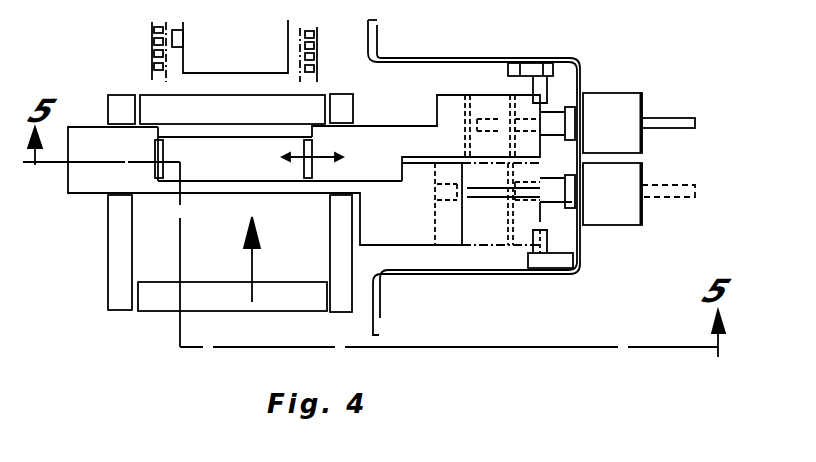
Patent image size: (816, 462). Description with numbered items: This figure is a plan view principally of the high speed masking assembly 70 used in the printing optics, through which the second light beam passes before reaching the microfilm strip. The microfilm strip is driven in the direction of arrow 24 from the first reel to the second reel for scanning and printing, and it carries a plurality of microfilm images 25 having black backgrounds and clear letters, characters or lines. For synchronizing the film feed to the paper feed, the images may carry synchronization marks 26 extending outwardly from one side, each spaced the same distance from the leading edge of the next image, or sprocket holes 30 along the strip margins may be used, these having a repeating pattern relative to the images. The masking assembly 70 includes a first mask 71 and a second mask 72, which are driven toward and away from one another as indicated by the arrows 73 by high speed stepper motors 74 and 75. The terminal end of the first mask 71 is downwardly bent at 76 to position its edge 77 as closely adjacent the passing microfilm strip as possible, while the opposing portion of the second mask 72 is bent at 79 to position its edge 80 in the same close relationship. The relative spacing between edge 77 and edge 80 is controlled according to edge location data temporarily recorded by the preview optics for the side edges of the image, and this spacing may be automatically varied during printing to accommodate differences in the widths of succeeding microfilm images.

The arrow 24 is at (253, 263).
The microfilm image 25 is at (280, 35).
The synchronization mark 26 is at (173, 33).
The sprocket holes 30 is at (313, 58).
The masking assembly 70 is at (425, 72).
The first mask 71 is at (407, 135).
The second mask 72 is at (225, 188).
The arrows 73 is at (303, 150).
The high speed stepper motor 74 is at (612, 100).
The high speed stepper motor 75 is at (623, 218).
The downward bend of first mask 76 is at (315, 168).
The edge of first mask 77 is at (303, 167).
The bend of second mask 79 is at (155, 153).
The edge of second mask 80 is at (165, 147).